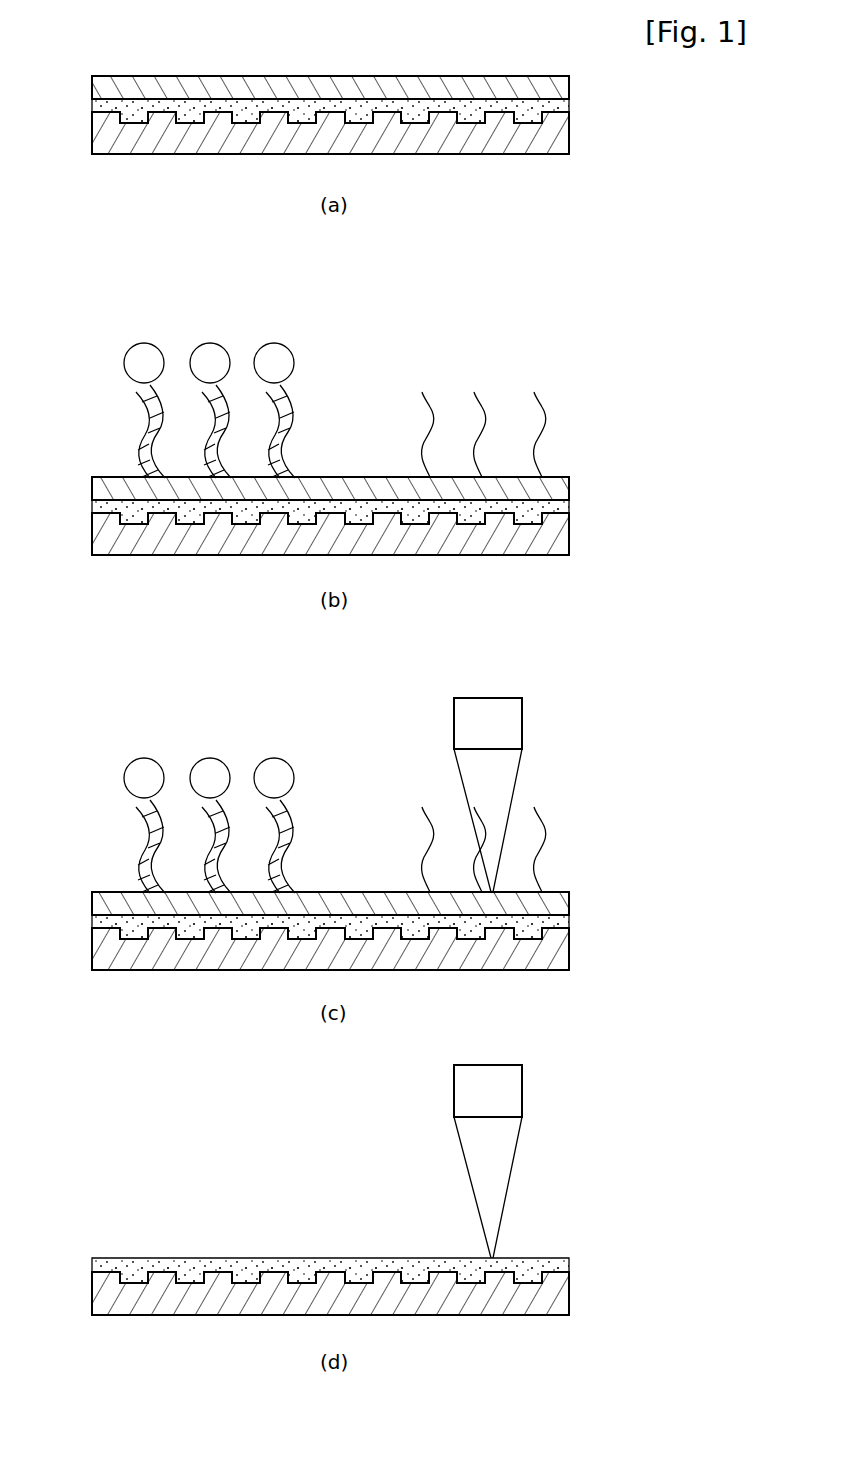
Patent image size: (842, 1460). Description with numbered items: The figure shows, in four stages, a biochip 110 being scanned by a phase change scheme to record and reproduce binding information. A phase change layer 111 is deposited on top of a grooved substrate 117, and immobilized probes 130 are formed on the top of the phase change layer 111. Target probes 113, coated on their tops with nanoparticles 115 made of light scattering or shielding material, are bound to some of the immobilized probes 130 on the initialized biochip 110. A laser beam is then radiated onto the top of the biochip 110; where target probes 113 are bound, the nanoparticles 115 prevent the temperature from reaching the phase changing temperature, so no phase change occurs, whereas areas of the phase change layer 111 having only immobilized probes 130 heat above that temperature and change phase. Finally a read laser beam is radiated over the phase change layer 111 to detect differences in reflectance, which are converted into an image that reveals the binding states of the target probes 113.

The biochip 110 is at (569, 84).
The phase change layer 111 is at (569, 106).
The target probes 113 is at (140, 428).
The nanoparticles 115 is at (155, 343).
The substrate 117 is at (569, 130).
The immobilized probes 130 is at (550, 425).